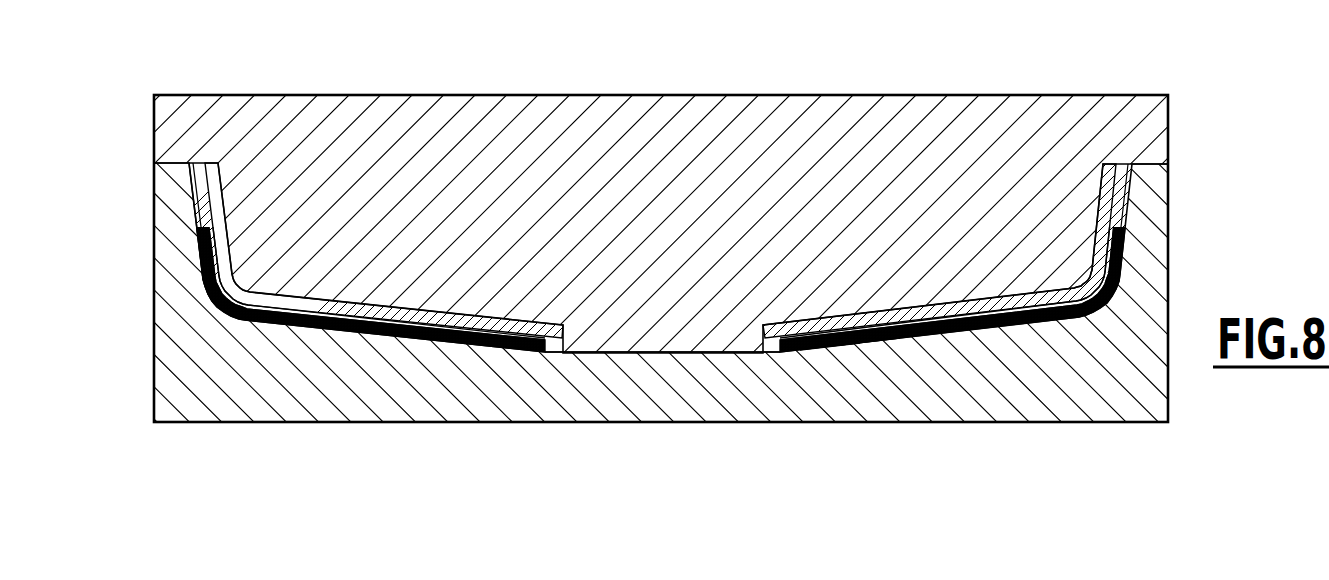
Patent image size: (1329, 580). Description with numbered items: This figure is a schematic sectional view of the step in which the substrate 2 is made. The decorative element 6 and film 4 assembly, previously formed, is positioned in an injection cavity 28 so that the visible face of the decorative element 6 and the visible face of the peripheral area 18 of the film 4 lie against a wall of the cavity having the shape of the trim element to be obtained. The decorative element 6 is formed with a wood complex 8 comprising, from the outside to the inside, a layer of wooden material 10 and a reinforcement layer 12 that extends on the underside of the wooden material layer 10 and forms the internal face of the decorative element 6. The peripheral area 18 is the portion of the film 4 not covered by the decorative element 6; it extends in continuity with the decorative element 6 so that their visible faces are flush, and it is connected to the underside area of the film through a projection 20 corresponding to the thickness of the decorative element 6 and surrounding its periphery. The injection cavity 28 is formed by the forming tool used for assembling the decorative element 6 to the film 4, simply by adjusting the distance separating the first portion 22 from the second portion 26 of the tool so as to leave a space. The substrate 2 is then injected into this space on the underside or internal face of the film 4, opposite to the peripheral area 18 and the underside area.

The substrate 2 is at (1118, 184).
The film in plastic material 4 is at (1130, 210).
The decorative element 6 is at (1123, 257).
The wood complex 8 is at (714, 309).
The layer of wooden material 10 is at (878, 347).
The reinforcement layer 12 is at (837, 350).
The peripheral area 18 is at (190, 204).
The projection 20 is at (767, 355).
The first portion 22 is at (307, 397).
The second portion 26 is at (610, 130).
The injection cavity 28 is at (207, 270).